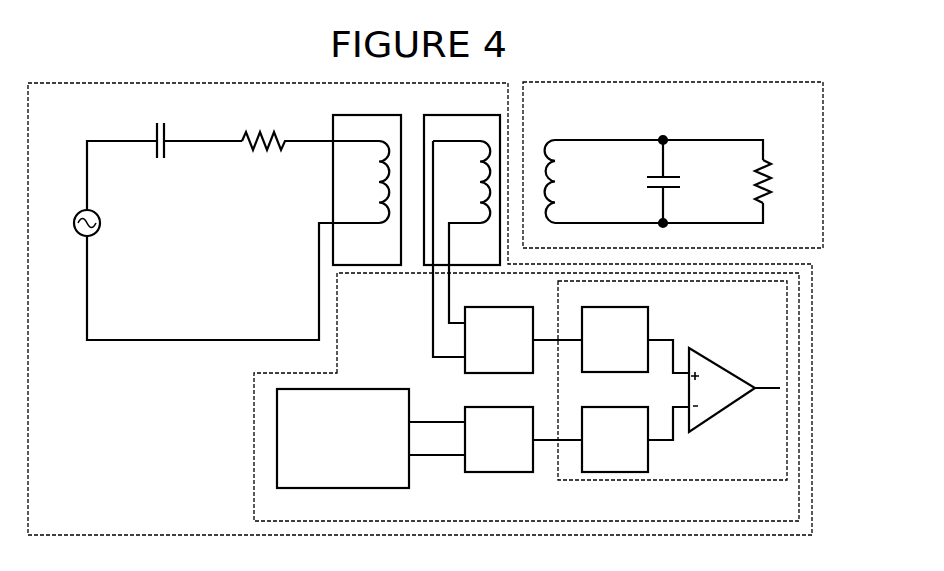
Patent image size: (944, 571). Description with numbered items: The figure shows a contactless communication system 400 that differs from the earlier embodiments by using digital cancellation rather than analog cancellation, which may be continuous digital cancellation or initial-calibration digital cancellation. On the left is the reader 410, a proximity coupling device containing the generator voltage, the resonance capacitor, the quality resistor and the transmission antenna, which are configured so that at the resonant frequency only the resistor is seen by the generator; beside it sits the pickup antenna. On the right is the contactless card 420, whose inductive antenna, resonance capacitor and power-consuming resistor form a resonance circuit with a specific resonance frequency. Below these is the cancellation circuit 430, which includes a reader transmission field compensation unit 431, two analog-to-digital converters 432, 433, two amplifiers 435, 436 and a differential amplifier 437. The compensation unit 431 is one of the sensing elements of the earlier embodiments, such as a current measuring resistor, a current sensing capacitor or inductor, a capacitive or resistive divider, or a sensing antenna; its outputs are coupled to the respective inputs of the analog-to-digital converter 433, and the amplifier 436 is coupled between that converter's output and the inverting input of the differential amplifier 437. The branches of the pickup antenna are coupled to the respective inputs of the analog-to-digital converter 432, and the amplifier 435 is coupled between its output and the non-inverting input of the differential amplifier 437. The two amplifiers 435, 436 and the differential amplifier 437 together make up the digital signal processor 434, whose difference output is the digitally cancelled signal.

The contactless communication system 400 is at (746, 50).
The reader 410 is at (497, 83).
The contactless card 420 is at (735, 82).
The cancellation circuit 430 is at (799, 290).
The reader transmission field compensation unit 431 is at (348, 389).
The analog-to-digital converter 432 is at (491, 307).
The analog-to-digital converter 433 is at (495, 472).
The digital signal processor 434 is at (788, 345).
The amplifier 435 is at (650, 325).
The amplifier 436 is at (650, 462).
The differential amplifier 437 is at (710, 358).